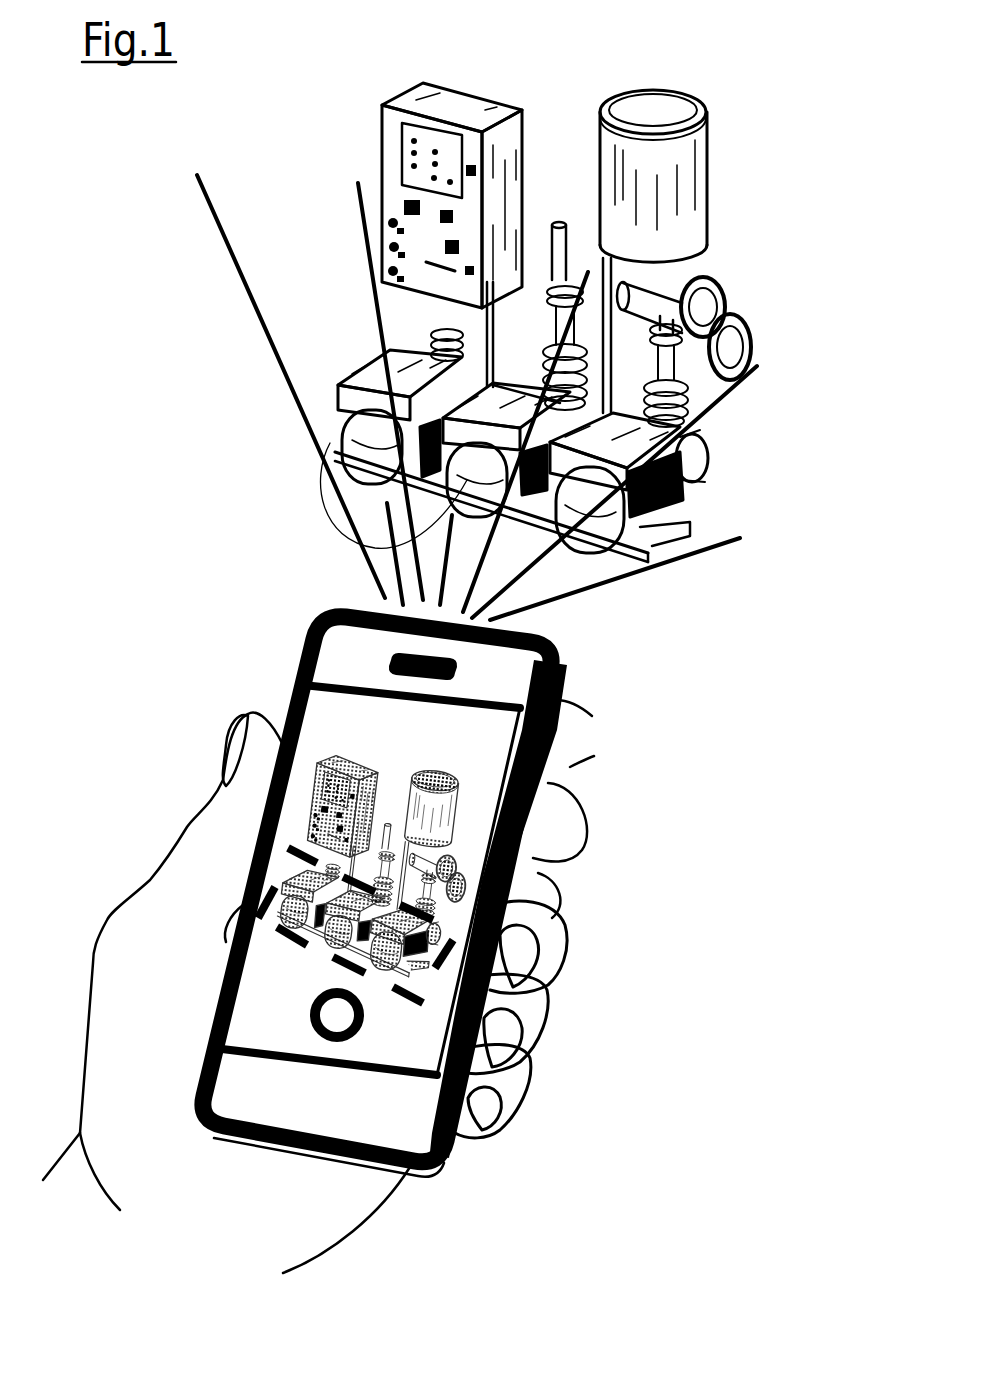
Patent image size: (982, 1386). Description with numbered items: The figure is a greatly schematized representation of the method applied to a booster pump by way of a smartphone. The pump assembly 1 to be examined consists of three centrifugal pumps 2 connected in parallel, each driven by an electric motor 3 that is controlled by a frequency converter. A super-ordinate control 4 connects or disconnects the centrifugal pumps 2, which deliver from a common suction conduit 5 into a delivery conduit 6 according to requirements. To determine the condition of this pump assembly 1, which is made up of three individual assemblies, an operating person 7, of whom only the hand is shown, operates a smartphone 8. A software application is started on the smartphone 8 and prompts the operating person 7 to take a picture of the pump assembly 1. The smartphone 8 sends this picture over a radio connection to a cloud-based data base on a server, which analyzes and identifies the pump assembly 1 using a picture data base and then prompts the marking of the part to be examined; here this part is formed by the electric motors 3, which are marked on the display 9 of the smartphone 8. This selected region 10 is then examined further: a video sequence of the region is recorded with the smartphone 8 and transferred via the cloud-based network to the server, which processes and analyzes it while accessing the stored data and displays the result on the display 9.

The pump assembly 1 is at (723, 267).
The centrifugal pump 2 is at (693, 465).
The electric motor 3 is at (360, 450).
The super-ordinate control 4 is at (447, 108).
The common suction conduit 5 is at (730, 348).
The delivery conduit 6 is at (708, 304).
The operating person 7 is at (338, 1217).
The smartphone 8 is at (560, 708).
The display 9 is at (500, 777).
The selected region 10 is at (440, 927).